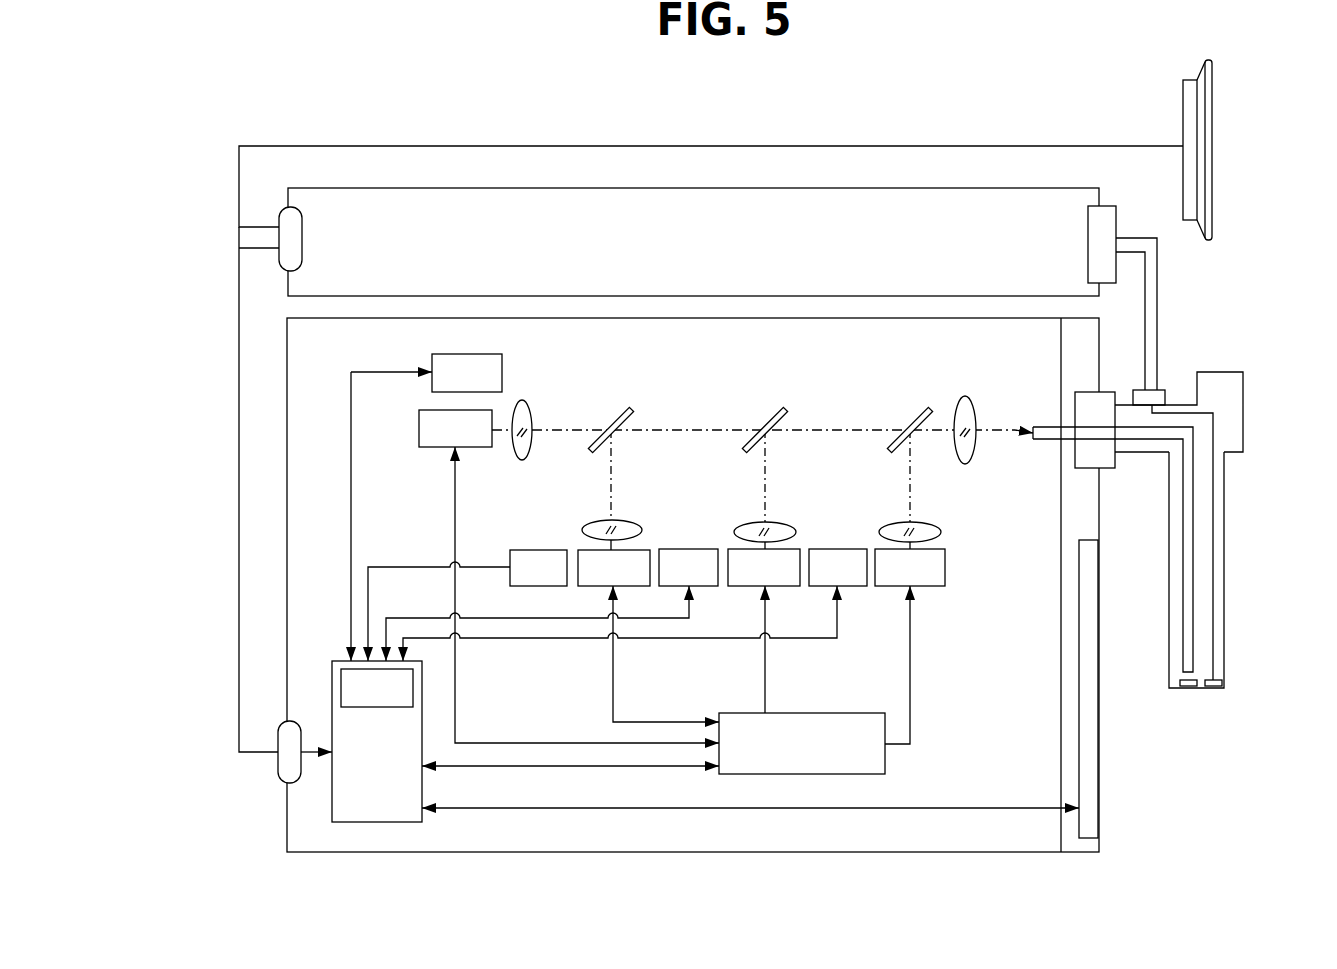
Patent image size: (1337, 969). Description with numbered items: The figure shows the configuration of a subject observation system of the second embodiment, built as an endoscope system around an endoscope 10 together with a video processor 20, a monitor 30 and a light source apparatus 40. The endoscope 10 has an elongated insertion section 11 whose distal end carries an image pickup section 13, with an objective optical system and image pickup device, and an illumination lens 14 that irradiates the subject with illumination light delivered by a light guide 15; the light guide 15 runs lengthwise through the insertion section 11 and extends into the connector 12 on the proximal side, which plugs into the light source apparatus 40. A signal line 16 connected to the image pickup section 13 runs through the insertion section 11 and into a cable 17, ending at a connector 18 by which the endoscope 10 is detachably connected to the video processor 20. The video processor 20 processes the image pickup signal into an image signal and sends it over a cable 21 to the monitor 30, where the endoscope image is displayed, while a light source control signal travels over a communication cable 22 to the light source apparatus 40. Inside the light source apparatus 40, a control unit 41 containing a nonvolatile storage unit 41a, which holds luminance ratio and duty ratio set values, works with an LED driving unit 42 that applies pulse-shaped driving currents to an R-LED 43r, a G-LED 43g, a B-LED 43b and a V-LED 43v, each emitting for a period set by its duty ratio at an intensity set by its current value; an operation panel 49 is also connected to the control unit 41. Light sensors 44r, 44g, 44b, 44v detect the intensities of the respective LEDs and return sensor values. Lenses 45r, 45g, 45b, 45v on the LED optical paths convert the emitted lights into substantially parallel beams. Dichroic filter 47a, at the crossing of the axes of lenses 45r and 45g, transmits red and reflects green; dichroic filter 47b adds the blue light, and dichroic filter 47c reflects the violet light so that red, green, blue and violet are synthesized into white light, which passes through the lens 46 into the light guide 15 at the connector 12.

The endoscope 10 is at (1224, 476).
The insertion section 11 is at (1224, 521).
The connector 12 is at (1115, 460).
The image pickup section 13 is at (1213, 690).
The illumination lens 14 is at (1188, 690).
The light guide 15 is at (1182, 606).
The signal line 16 is at (1214, 596).
The cable 17 is at (1157, 312).
The connector 18 is at (1116, 226).
The video processor 20 is at (692, 188).
The cable 21 is at (490, 146).
The communication cable 22 is at (239, 497).
The monitor 30 is at (1212, 145).
The light source apparatus 40 is at (692, 852).
The control unit 41 is at (359, 762).
The storage unit 41a is at (345, 669).
The LED driving unit 42 is at (885, 762).
The R-LED 43r is at (419, 422).
The G-LED 43g is at (593, 587).
The B-LED 43b is at (740, 587).
The V-LED 43v is at (898, 587).
The light sensor 44r is at (475, 354).
The light sensor 44g is at (523, 550).
The light sensor 44b is at (674, 549).
The light sensor 44v is at (823, 549).
The lens 45r is at (526, 400).
The lens 45g is at (632, 521).
The lens 45b is at (786, 523).
The lens 45v is at (932, 523).
The lens 46 is at (966, 397).
The dichroic filter 47a is at (617, 410).
The dichroic filter 47b is at (769, 410).
The dichroic filter 47c is at (914, 411).
The operation panel 49 is at (1099, 797).